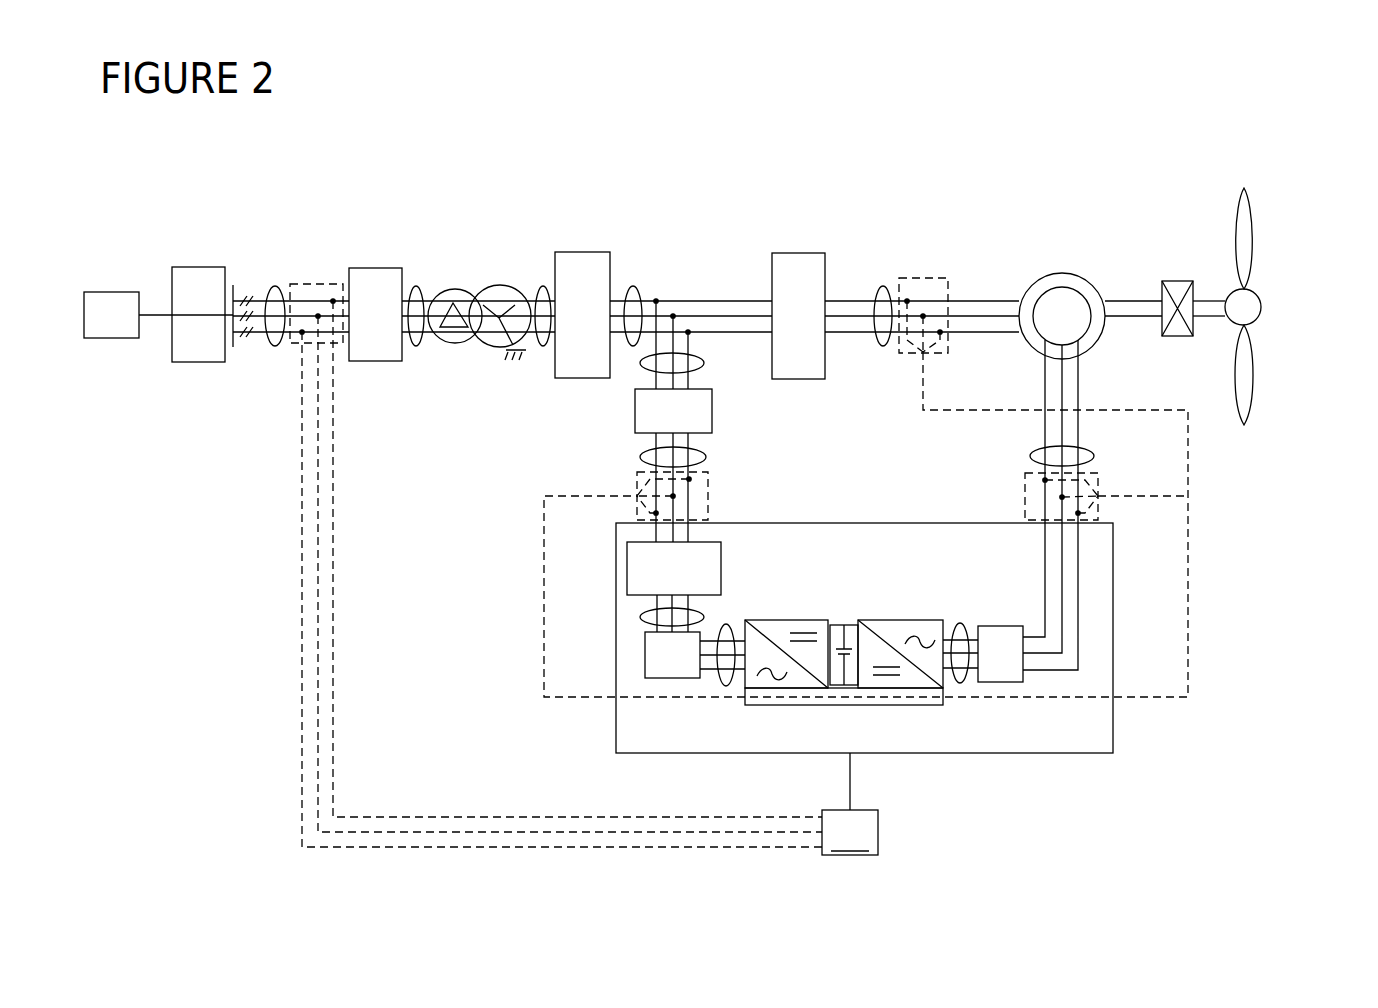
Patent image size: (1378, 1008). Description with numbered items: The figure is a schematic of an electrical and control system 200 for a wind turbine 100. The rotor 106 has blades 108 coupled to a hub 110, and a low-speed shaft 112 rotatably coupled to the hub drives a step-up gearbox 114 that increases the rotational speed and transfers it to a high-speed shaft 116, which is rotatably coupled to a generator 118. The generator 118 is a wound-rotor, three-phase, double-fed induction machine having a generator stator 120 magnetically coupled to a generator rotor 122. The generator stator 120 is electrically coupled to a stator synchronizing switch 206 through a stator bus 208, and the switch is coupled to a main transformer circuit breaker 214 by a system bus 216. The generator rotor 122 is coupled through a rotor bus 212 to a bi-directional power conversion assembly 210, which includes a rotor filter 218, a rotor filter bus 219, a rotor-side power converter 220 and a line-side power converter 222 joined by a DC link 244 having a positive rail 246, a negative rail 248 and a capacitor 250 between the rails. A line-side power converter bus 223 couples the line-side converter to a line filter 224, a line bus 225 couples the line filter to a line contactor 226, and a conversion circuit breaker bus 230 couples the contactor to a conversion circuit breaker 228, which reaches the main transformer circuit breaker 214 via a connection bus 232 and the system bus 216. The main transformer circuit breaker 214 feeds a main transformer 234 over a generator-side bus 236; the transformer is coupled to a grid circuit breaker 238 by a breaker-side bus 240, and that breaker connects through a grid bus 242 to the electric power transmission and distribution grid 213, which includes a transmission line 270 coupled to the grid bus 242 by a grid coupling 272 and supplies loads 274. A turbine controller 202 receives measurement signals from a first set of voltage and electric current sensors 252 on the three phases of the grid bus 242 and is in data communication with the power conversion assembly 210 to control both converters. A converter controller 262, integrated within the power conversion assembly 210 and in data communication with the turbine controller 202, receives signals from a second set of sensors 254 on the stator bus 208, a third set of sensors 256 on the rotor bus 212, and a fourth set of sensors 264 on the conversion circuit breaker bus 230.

The wind turbine 100 is at (1297, 277).
The rotor 106 is at (1297, 306).
The blades 108 is at (1253, 245).
The hub 110 is at (1262, 308).
The low-speed shaft 112 is at (1208, 300).
The step-up gearbox 114 is at (1175, 281).
The high-speed shaft 116 is at (1133, 300).
The generator 118 is at (1076, 251).
The generator stator 120 is at (1060, 272).
The generator rotor 122 is at (1055, 293).
The electrical and control system 200 is at (243, 160).
The turbine controller 202 is at (851, 804).
The stator synchronizing switch 206 is at (800, 253).
The stator bus 208 is at (883, 285).
The power conversion assembly 210 is at (1113, 633).
The rotor bus 212 is at (1095, 456).
The electric power transmission and distribution grid 213 is at (200, 262).
The main transformer circuit breaker 214 is at (583, 252).
The system bus 216 is at (633, 285).
The rotor filter 218 is at (998, 637).
The rotor filter bus 219 is at (960, 625).
The rotor-side power converter 220 is at (943, 680).
The line-side power converter 222 is at (745, 690).
The line-side power converter bus 223 is at (738, 625).
The line filter 224 is at (645, 655).
The line bus 225 is at (640, 612).
The line contactor 226 is at (627, 568).
The conversion circuit breaker 228 is at (712, 410).
The conversion circuit breaker bus 230 is at (703, 452).
The connection bus 232 is at (703, 363).
The main transformer 234 is at (497, 285).
The generator-side bus 236 is at (543, 283).
The grid circuit breaker 238 is at (370, 268).
The breaker-side bus 240 is at (416, 286).
The grid bus 242 is at (275, 285).
The DC link 244 is at (830, 580).
The positive rail 246 is at (850, 623).
The negative rail 248 is at (852, 685).
The capacitor 250 is at (838, 650).
The first set of voltage and electric current sensors 252 is at (292, 352).
The second set of voltage and electric current sensors 254 is at (938, 273).
The third set of voltage and electric current sensors 256 is at (1013, 493).
The converter controller 262 is at (903, 695).
The fourth set of voltage and electric current sensors 264 is at (708, 496).
The transmission lines 270 is at (190, 318).
The grid coupling 272 is at (233, 285).
The loads 274 is at (112, 292).